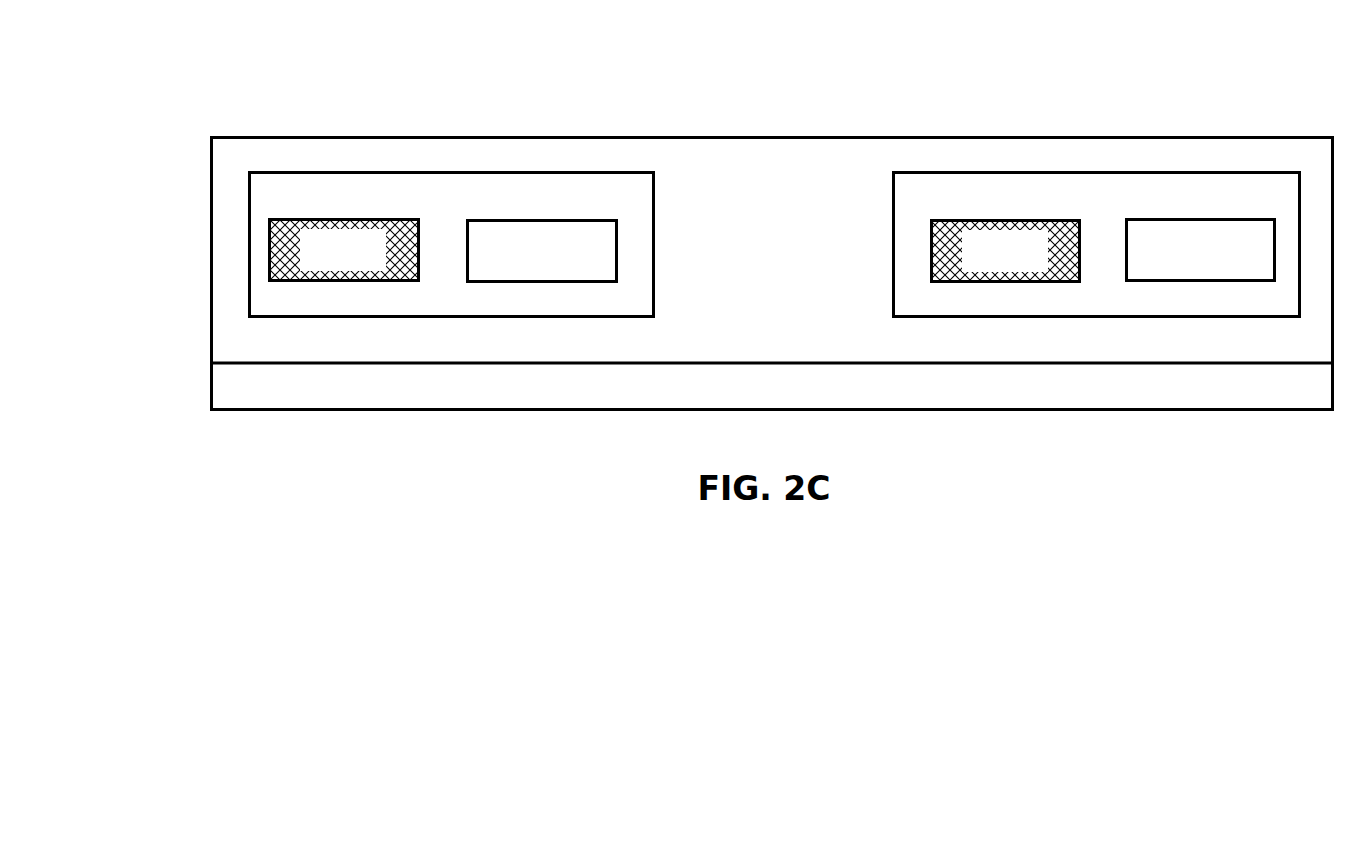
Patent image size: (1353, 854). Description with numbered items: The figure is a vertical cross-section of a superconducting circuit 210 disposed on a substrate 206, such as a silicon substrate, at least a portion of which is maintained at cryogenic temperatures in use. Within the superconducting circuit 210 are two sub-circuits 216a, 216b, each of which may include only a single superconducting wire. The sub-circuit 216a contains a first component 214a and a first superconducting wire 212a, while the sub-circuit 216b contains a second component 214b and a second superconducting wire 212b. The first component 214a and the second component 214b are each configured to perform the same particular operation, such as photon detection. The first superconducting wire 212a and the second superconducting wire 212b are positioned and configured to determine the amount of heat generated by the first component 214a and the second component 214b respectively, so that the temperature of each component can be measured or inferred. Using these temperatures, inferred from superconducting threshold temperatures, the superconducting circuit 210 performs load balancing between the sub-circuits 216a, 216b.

The superconducting circuit 210 is at (162, 101).
The substrate 206 is at (791, 396).
The sub-circuit 216a is at (313, 204).
The sub-circuit 216b is at (959, 204).
The first component 214a is at (315, 260).
The second component 214b is at (977, 260).
The first superconducting wire 212a is at (513, 260).
The second superconducting wire 212b is at (1172, 260).